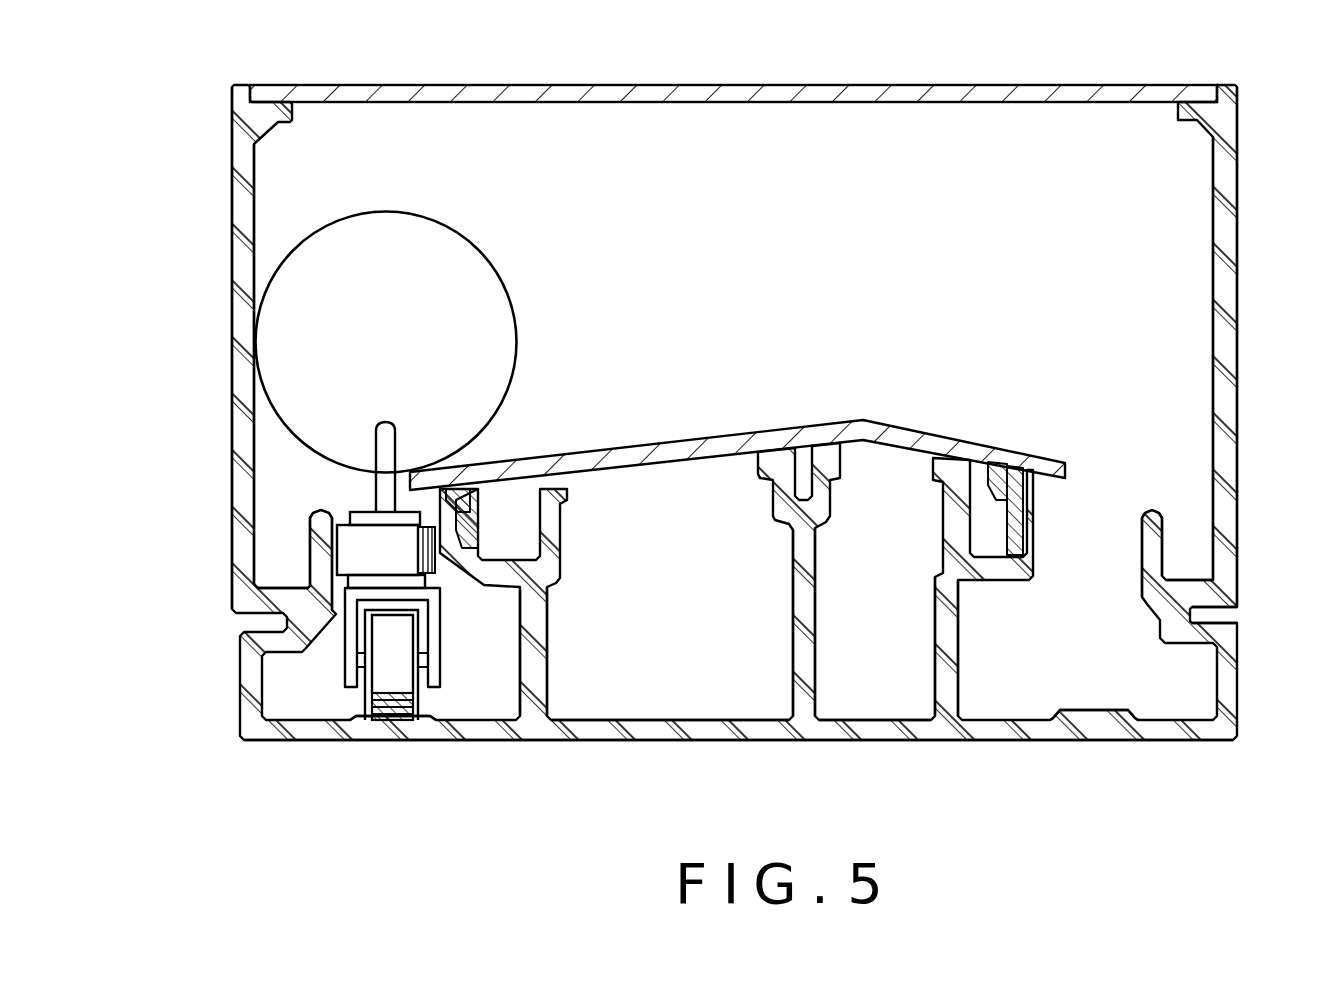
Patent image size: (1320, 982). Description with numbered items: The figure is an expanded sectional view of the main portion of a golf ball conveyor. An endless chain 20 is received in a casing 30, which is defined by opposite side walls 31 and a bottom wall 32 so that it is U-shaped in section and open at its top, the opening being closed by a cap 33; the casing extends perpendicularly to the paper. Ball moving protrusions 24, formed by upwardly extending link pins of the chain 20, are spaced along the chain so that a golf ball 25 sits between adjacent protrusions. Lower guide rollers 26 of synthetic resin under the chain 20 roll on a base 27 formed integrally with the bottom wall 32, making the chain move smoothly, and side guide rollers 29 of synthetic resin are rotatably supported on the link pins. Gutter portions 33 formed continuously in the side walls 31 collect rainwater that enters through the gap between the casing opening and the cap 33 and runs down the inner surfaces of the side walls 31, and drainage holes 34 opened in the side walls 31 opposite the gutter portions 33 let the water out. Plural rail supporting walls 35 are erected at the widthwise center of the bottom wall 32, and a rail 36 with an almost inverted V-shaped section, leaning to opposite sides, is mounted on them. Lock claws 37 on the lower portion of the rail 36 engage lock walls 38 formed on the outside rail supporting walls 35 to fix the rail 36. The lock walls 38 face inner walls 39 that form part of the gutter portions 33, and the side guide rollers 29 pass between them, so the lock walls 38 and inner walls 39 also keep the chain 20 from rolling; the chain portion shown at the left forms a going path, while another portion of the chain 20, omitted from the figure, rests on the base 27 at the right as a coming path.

The chain 20 is at (355, 597).
The ball moving protrusion 24 is at (382, 435).
The golf ball 25 is at (477, 284).
The lower guide roller 26 is at (390, 680).
The base 27 is at (415, 735).
The side guide roller 29 is at (360, 550).
The casing 30 is at (1237, 210).
The side wall 31 is at (232, 292).
The bottom wall 32 is at (680, 730).
The cap 33 is at (843, 85).
The drainage hole 34 is at (1230, 568).
The rail supporting wall 35 is at (537, 637).
The rail 36 is at (690, 447).
The lock claw 37 is at (473, 536).
The lock wall 38 is at (460, 540).
The inner wall 39 is at (306, 520).